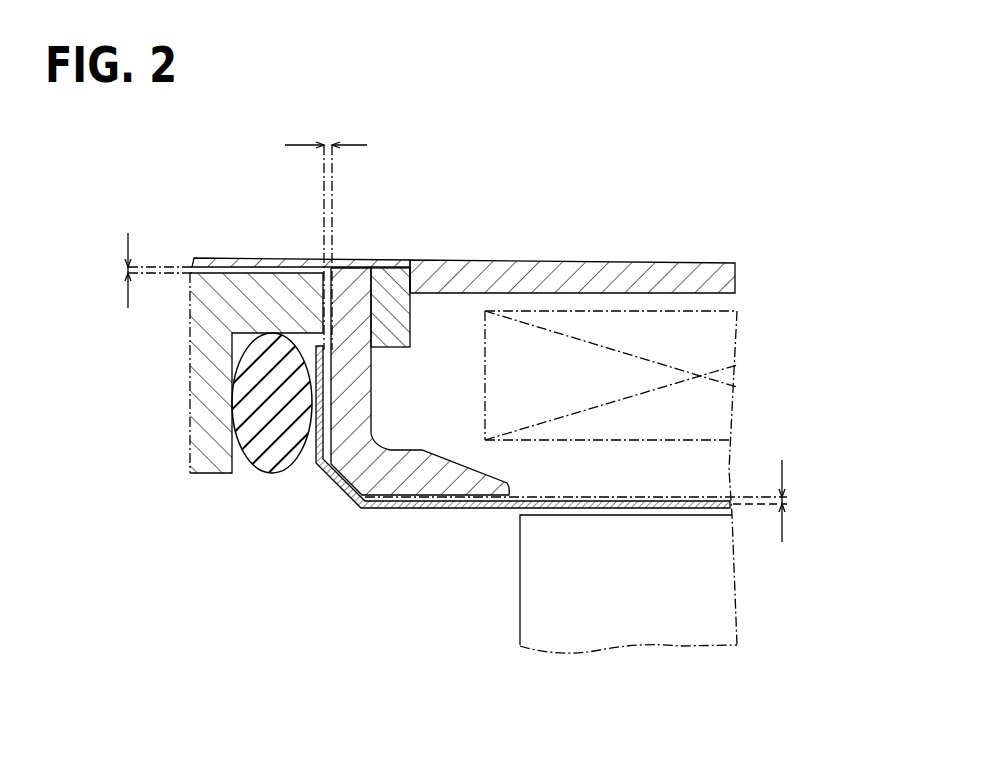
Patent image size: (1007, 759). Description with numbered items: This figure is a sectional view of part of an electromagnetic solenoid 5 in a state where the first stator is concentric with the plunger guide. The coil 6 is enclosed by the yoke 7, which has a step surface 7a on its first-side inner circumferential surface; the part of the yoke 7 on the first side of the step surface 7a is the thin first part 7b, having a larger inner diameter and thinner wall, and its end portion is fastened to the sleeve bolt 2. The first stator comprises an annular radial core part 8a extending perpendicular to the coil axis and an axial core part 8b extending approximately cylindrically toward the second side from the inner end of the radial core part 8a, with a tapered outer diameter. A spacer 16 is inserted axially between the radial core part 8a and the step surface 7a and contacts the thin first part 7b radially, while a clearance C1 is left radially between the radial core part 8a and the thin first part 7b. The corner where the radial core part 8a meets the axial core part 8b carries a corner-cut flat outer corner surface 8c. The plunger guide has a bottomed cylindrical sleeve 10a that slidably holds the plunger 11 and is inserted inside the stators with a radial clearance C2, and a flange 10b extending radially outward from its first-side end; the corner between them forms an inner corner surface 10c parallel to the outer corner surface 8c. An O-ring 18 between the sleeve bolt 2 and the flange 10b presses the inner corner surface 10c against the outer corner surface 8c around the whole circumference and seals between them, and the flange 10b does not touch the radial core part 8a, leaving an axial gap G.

The sleeve bolt 2 is at (220, 335).
The display unit 5 is at (522, 182).
The coil 6 is at (695, 333).
The yoke 7 is at (463, 269).
The step surface 7a is at (410, 280).
The thin first part 7b is at (283, 257).
The radial core part 8a is at (350, 317).
The axial core part 8b is at (447, 478).
The outer corner surface 8c is at (337, 482).
The cylindrical sleeve 10a is at (445, 508).
The flange 10b is at (310, 370).
The inner corner surface 10c is at (350, 477).
The plunger 11 is at (553, 557).
The spacer 16 is at (383, 283).
The O-ring 18 is at (262, 437).
The clearance C1 is at (138, 270).
The clearance C2 is at (596, 501).
The gap G is at (326, 230).